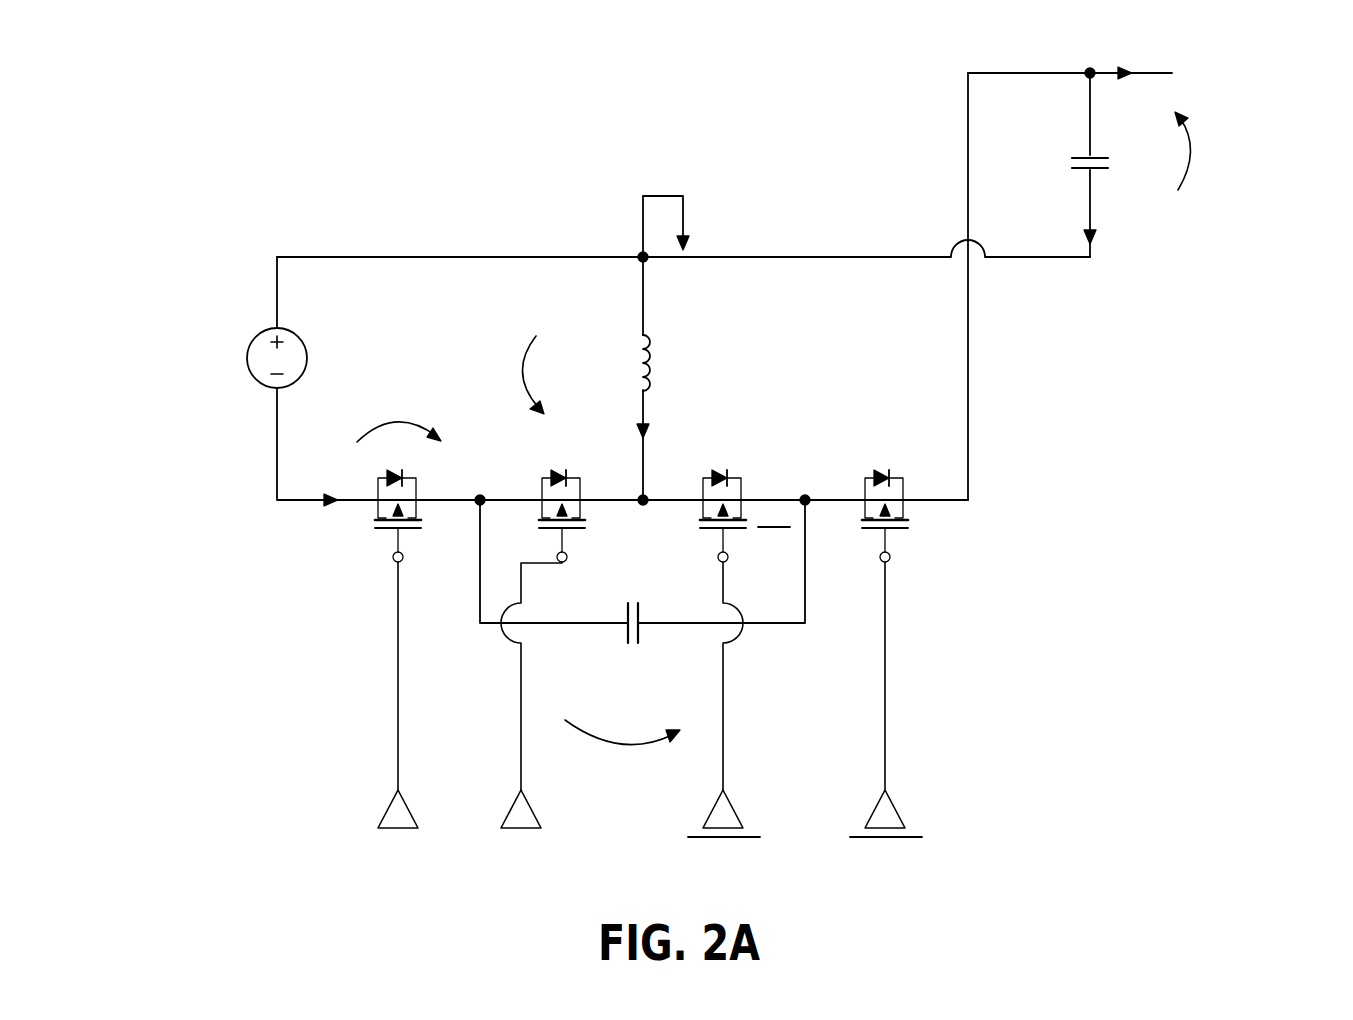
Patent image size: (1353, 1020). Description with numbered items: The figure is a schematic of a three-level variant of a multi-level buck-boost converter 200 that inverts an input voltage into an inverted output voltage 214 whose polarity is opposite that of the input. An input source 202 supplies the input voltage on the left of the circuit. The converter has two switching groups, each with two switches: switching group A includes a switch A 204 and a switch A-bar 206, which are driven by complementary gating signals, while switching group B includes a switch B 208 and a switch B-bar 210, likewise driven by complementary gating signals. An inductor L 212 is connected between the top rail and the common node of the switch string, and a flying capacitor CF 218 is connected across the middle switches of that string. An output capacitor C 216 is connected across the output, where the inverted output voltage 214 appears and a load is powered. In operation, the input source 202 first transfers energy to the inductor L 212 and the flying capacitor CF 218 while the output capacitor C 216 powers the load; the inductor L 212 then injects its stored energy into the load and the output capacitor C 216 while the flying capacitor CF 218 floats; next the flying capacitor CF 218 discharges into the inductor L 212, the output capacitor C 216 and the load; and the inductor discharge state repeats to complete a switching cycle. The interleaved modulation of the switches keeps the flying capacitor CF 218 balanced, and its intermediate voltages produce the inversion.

The multi-level buck-boost converter 200 is at (445, 84).
The input source 202 is at (257, 333).
The switch A 204 is at (366, 534).
The switch A-bar 206 is at (958, 531).
The switch B 208 is at (551, 457).
The switch B-bar 210 is at (752, 447).
The inductor L 212 is at (651, 362).
The inverted output voltage 214 is at (1182, 190).
The output capacitor C 216 is at (1085, 154).
The flying capacitor CF 218 is at (625, 617).